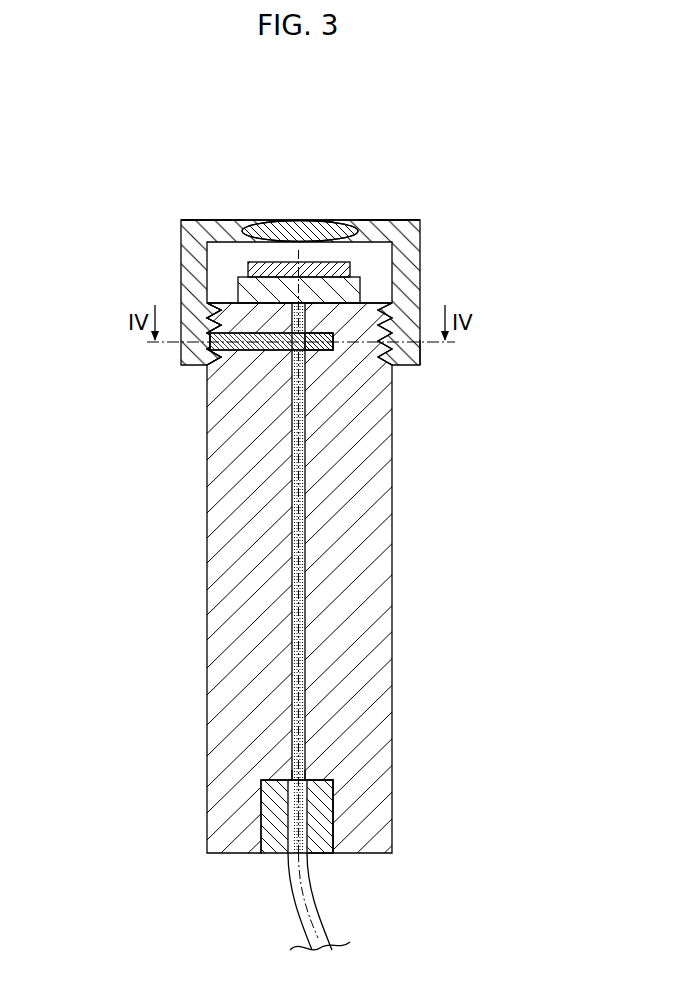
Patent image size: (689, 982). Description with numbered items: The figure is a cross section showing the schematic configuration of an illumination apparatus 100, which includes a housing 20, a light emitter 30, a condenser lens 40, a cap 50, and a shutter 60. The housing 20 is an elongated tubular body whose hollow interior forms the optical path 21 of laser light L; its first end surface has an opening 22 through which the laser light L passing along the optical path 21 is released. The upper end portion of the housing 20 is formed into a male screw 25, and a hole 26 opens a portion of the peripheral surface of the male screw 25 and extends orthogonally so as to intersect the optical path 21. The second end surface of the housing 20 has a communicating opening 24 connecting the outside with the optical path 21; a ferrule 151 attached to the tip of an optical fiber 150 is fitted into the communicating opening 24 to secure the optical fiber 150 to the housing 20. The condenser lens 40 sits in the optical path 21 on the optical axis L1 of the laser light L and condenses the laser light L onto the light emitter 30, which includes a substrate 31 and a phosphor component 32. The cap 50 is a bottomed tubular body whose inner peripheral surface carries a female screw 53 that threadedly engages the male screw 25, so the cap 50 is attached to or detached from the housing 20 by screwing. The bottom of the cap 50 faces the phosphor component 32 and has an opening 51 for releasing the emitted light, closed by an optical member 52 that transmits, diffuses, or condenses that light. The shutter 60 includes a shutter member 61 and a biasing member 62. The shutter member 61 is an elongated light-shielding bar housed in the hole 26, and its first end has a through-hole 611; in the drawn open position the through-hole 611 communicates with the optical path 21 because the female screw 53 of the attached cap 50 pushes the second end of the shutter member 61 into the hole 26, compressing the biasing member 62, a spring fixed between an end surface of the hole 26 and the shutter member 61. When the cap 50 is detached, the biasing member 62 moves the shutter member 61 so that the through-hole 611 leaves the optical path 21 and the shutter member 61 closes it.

The illumination apparatus 100 is at (348, 170).
The housing 20 is at (408, 595).
The optical path 21 is at (303, 768).
The opening 22 is at (300, 297).
The communicating opening 24 is at (325, 845).
The male screw 25 is at (395, 303).
The hole 26 is at (212, 355).
The light emitter 30 is at (206, 273).
The substrate 31 is at (238, 293).
The phosphor component 32 is at (247, 270).
The condenser lens 40 is at (300, 542).
The cap 50 is at (435, 230).
The opening 51 is at (243, 221).
The optical member 52 is at (322, 221).
The female screw 53 is at (420, 352).
The shutter 60 is at (362, 374).
The shutter member 61 is at (325, 351).
The biasing member 62 is at (336, 343).
The through-hole 611 is at (262, 365).
The optical fiber 150 is at (310, 922).
The ferrule 151 is at (272, 845).
The laser light L is at (296, 580).
The optical axis L1 is at (296, 928).